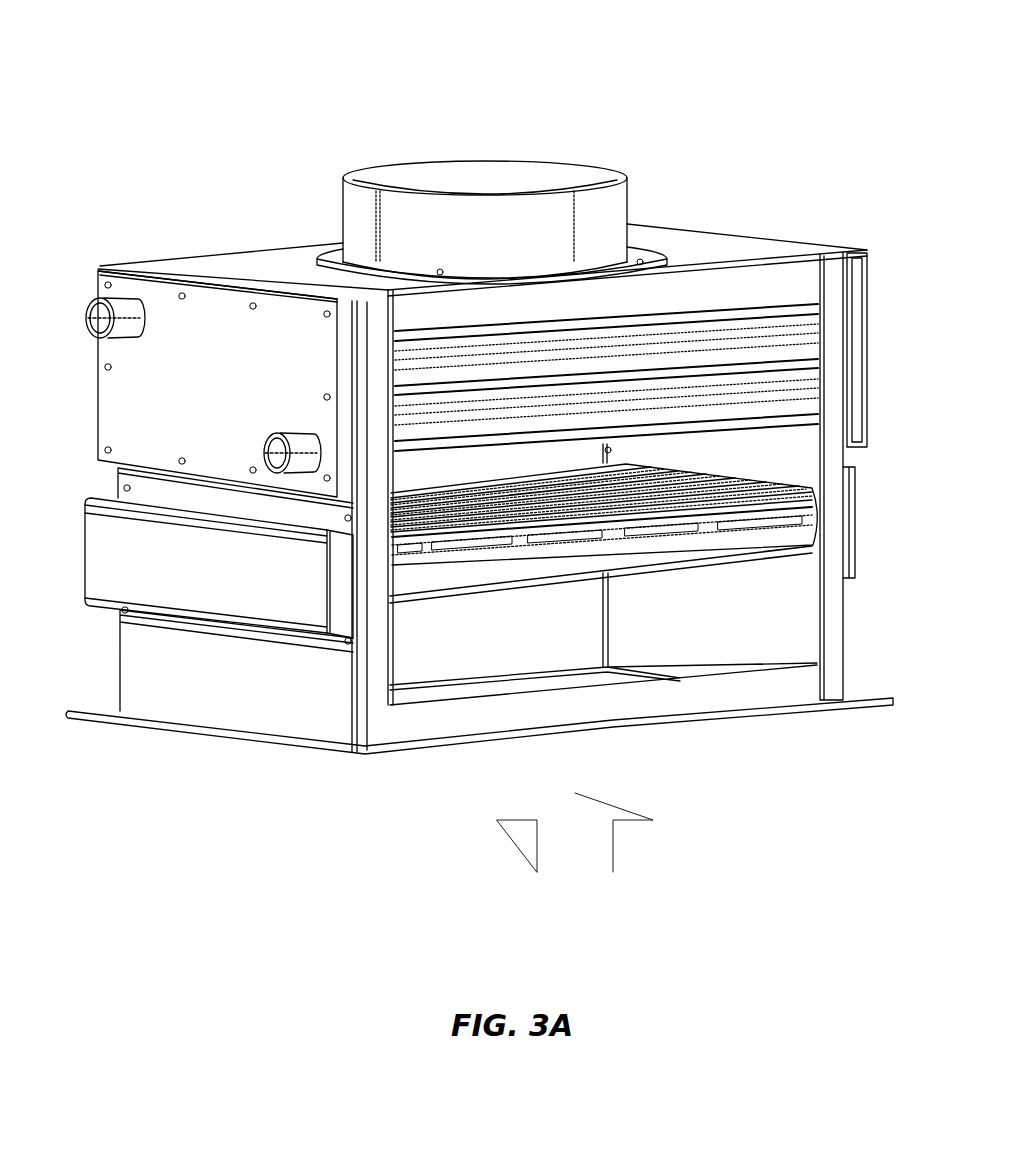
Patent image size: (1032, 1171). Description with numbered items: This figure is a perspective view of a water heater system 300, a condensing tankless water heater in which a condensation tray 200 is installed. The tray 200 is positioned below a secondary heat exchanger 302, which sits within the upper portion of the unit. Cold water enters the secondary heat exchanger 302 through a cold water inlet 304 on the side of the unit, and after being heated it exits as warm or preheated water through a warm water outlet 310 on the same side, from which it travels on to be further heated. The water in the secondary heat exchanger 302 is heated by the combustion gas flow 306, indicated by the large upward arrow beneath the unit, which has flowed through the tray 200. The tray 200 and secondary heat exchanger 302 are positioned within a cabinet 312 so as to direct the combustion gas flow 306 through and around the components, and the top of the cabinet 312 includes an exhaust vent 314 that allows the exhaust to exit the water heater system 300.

The water heater system 300 is at (210, 98).
The secondary heat exchanger 302 is at (808, 367).
The cold water inlet 304 is at (98, 299).
The combustion gas flow 306 is at (613, 837).
The warm water outlet 310 is at (277, 434).
The cabinet 312 is at (843, 628).
The exhaust vent 314 is at (600, 168).
The condensation tray 200 is at (800, 527).